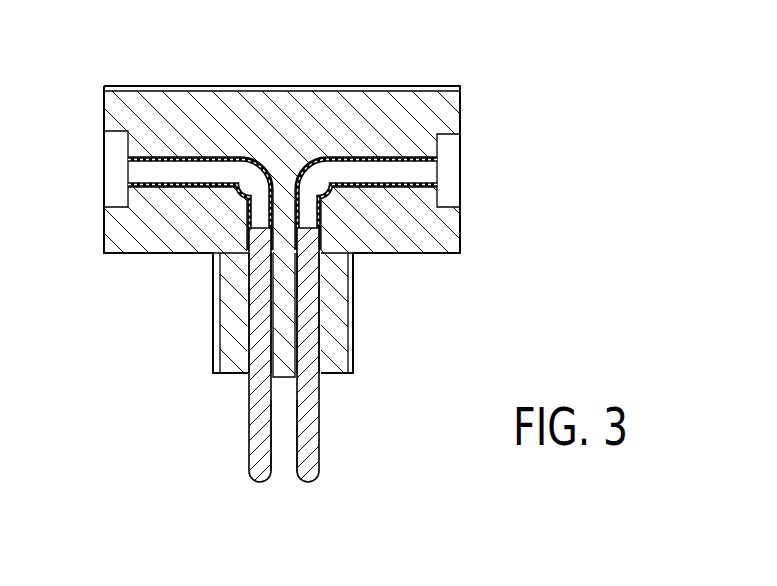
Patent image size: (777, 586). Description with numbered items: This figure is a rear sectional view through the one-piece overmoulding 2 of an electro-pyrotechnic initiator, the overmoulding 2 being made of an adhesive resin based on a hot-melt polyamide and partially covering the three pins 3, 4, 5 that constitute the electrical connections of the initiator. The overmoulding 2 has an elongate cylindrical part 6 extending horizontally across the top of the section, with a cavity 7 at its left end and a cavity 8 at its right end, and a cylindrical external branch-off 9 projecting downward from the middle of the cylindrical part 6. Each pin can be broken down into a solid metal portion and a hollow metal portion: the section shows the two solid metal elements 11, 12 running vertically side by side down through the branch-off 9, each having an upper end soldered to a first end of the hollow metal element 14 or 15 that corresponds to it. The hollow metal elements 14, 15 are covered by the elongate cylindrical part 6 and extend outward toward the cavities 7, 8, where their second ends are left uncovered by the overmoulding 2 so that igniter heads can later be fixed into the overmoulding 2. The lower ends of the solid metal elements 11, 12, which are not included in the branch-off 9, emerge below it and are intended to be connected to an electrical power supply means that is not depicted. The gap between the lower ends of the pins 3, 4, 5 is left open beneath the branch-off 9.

The overmoulding 2 is at (104, 232).
The pin 3 is at (285, 467).
The pin 4 is at (248, 437).
The pin 5 is at (319, 463).
The elongate cylindrical part 6 is at (288, 127).
The cavity 7 is at (105, 147).
The cavity 8 is at (461, 135).
The cylindrical external branch-off 9 is at (335, 317).
The solid metal element 11 is at (253, 318).
The solid metal element 12 is at (307, 335).
The hollow metal element 14 is at (187, 167).
The hollow metal element 15 is at (397, 167).